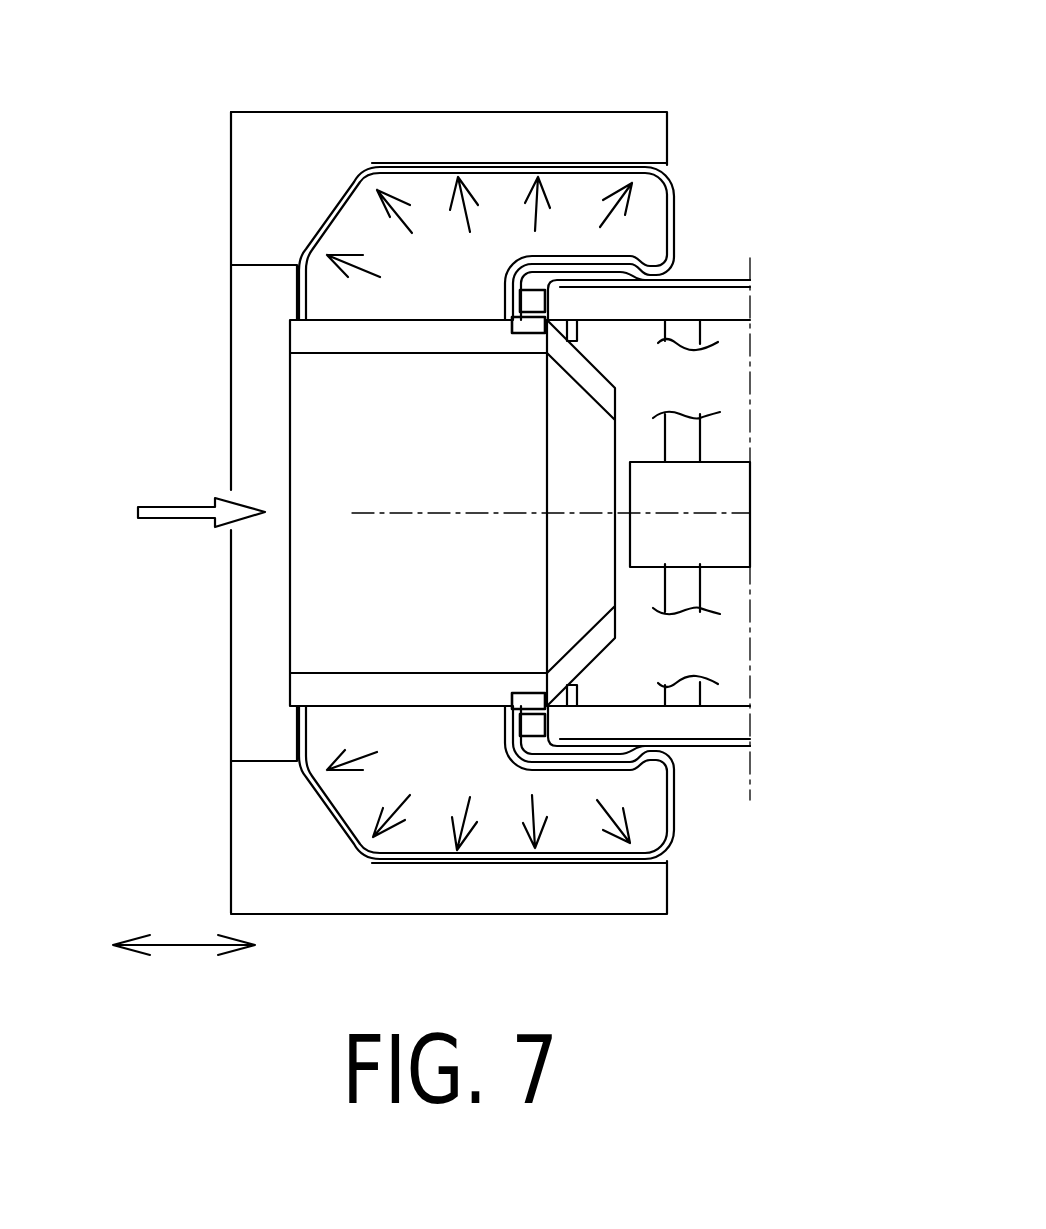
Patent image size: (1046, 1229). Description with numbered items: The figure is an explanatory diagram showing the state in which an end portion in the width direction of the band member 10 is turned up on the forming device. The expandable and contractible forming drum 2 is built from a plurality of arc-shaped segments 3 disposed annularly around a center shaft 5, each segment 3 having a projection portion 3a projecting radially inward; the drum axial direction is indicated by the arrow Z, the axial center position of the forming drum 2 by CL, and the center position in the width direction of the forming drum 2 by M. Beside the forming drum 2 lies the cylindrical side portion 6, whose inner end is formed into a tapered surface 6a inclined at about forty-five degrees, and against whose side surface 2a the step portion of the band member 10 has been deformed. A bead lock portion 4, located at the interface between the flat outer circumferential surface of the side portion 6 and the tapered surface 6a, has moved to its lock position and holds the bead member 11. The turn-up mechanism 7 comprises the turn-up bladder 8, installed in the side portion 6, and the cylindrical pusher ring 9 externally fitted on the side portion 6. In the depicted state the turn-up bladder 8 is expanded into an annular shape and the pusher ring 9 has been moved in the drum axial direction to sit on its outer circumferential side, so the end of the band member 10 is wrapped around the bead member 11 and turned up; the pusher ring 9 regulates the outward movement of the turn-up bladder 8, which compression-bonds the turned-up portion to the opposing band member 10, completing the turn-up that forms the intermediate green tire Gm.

The forming drum 2 is at (726, 775).
The side surface of the forming drum 2a is at (523, 300).
The segment 3 is at (728, 313).
The projection portion 3a is at (578, 323).
The bead lock portion 4 is at (525, 333).
The center shaft 5 is at (647, 493).
The side portion 6 is at (260, 388).
The tapered surface 6a is at (593, 375).
The turn-up mechanism 7 is at (449, 463).
The turn-up bladder 8 is at (653, 207).
The pusher ring 9 is at (434, 122).
The band member 10 is at (689, 273).
The bead member 11 is at (511, 266).
The intermediate green tire Gm is at (739, 262).
The center position in the width direction of the forming drum M is at (758, 509).
The axial center position of the forming drum CL is at (526, 514).
The drum axial direction Z is at (184, 928).